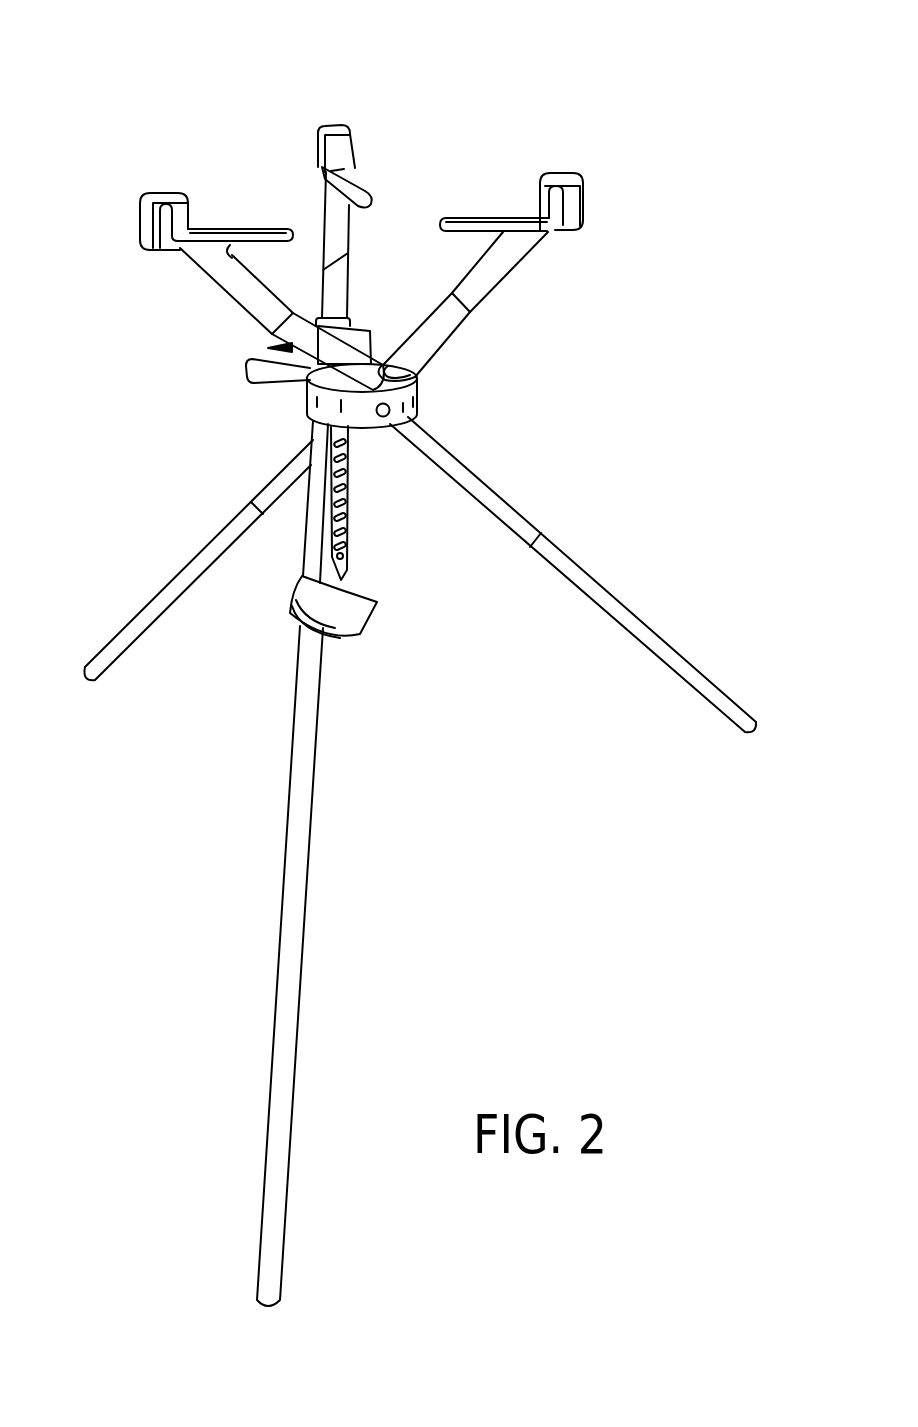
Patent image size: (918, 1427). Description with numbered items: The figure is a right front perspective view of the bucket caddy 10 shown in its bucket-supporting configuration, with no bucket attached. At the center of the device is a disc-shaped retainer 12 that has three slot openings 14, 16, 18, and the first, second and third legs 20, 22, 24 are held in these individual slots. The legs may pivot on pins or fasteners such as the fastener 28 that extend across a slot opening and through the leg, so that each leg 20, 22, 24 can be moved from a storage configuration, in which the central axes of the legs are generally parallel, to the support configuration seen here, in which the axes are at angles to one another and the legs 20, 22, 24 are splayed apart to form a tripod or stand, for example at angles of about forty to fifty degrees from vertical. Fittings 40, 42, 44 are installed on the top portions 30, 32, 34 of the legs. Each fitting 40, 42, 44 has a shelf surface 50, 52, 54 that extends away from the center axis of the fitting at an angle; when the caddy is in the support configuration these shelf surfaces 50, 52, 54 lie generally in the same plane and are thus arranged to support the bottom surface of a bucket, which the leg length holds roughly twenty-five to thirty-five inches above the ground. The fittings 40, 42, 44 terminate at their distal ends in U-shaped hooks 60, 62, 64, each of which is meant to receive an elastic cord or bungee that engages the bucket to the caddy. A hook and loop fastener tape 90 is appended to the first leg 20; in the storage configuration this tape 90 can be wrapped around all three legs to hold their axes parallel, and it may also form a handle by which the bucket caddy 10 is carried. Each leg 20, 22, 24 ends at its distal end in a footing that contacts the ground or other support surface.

The bucket caddy 10 is at (552, 114).
The retainer 12 is at (420, 398).
The slot opening 14 is at (306, 386).
The slot opening 16 is at (433, 367).
The slot opening 18 is at (379, 358).
The first leg 20 is at (296, 828).
The second leg 22 is at (642, 647).
The third leg 24 is at (162, 600).
The pin or fastener 28 is at (383, 416).
The top portion 30 is at (308, 647).
The top portion 32 is at (512, 507).
The top portion 34 is at (263, 497).
The fitting 40 is at (333, 232).
The fitting 42 is at (233, 283).
The fitting 44 is at (500, 268).
The shelf surface 50 is at (357, 190).
The shelf surface 52 is at (222, 232).
The shelf surface 54 is at (470, 218).
The U-shaped hook 60 is at (331, 128).
The U-shaped hook 62 is at (147, 224).
The U-shaped hook 64 is at (578, 210).
The hook and loop fastener tape 90 is at (357, 613).